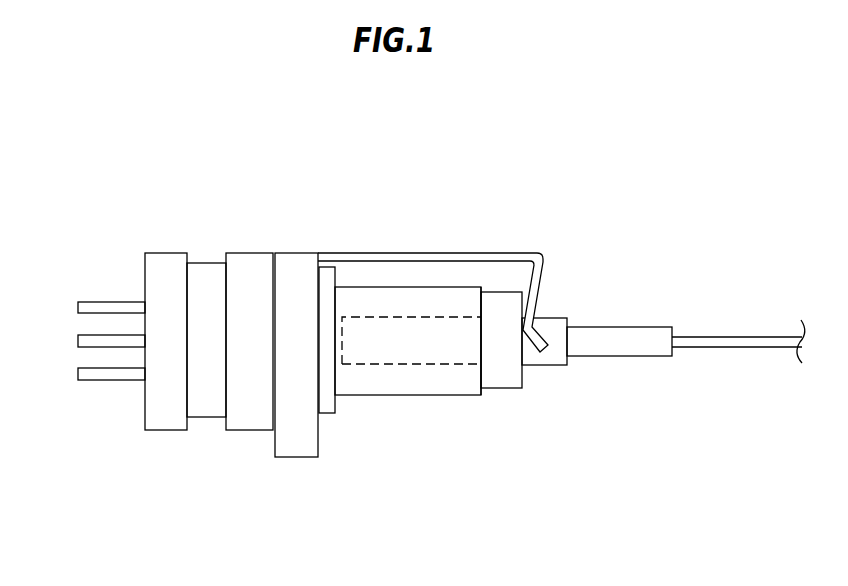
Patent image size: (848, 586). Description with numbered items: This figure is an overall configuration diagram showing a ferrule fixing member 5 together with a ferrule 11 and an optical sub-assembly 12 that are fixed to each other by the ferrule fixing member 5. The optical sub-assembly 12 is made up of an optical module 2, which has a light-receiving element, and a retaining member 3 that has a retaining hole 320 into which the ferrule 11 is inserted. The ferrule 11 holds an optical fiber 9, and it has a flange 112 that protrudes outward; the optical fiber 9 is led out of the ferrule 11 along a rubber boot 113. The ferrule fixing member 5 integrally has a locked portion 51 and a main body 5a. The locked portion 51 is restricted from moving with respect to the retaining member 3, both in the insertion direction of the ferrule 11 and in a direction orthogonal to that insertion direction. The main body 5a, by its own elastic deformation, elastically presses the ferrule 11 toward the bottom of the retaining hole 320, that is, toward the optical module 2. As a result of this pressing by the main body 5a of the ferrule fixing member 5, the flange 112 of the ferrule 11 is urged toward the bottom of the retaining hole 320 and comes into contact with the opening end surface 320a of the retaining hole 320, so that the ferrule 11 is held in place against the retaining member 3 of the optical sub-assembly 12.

The optical sub-assembly 12 is at (230, 215).
The optical module 2 is at (152, 433).
The retaining member 3 is at (370, 432).
The retaining hole 320 is at (385, 367).
The opening end surface 320a is at (482, 375).
The ferrule fixing member 5 is at (710, 180).
The main body 5a is at (545, 245).
The locked portion 51 is at (300, 272).
The ferrule 11 is at (560, 302).
The flange 112 is at (510, 365).
The rubber boot 113 is at (628, 345).
The optical fiber 9 is at (723, 340).